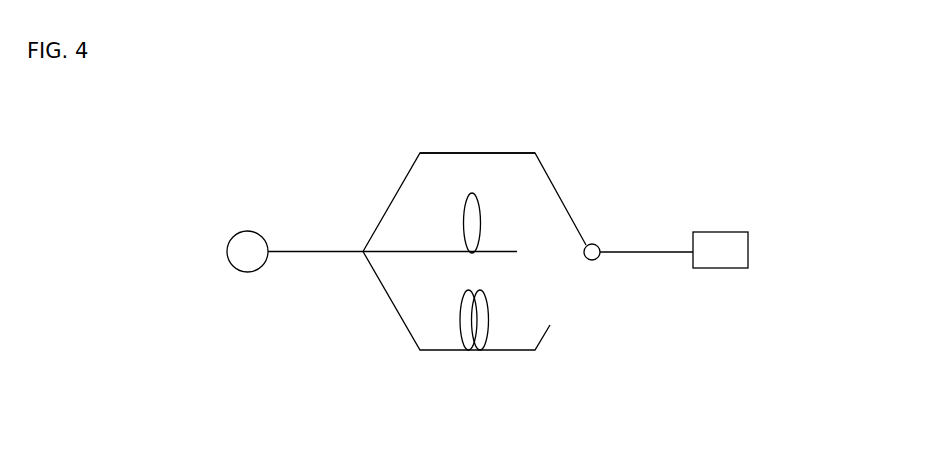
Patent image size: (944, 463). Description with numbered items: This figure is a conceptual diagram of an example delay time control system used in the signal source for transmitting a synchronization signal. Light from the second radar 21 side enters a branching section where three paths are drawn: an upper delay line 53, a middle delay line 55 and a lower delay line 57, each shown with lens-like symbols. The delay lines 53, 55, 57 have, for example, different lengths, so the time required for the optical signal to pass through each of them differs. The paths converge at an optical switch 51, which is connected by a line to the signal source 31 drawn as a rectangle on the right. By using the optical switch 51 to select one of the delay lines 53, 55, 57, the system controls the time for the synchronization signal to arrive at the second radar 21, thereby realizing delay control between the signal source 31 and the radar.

The second radar 21 is at (255, 236).
The signal source 31 is at (730, 240).
The optical switch 51 is at (599, 244).
The delay line 53 is at (510, 153).
The delay line 55 is at (503, 250).
The delay line 57 is at (498, 348).